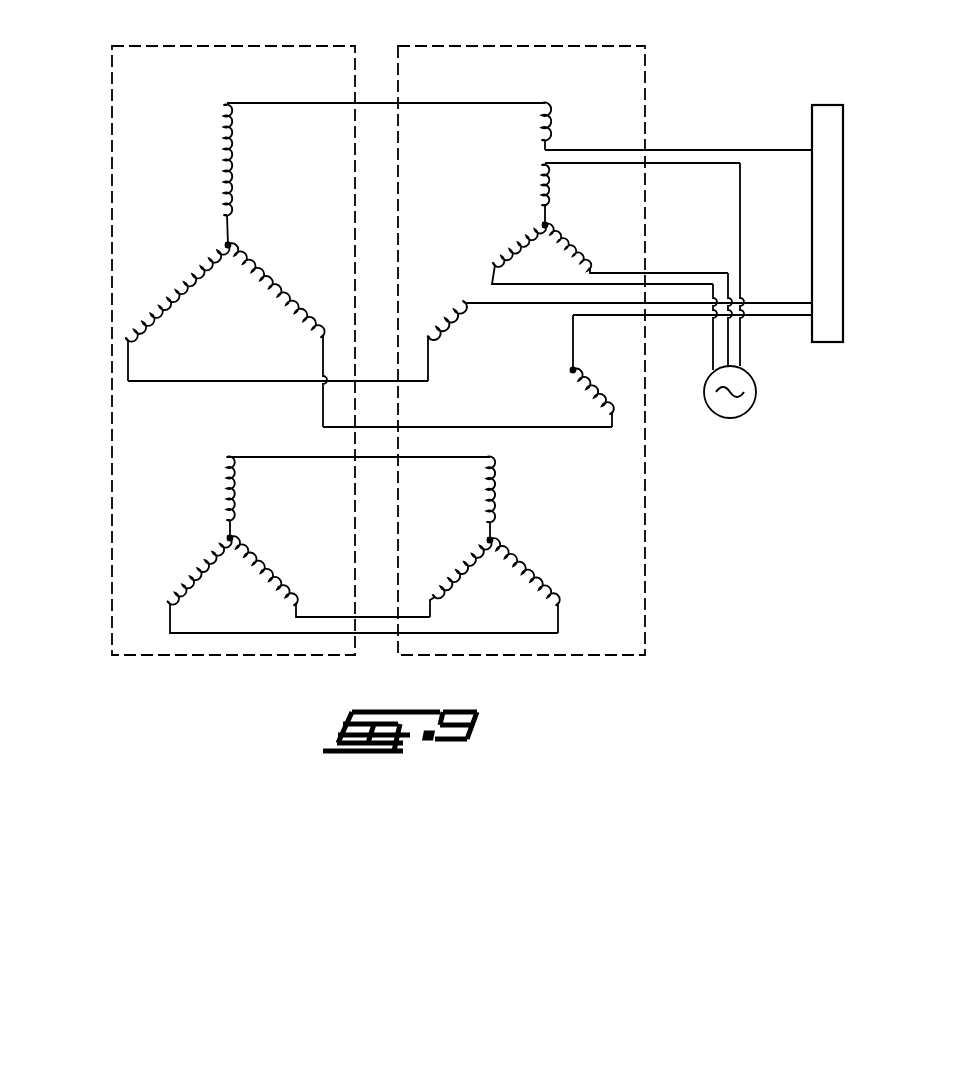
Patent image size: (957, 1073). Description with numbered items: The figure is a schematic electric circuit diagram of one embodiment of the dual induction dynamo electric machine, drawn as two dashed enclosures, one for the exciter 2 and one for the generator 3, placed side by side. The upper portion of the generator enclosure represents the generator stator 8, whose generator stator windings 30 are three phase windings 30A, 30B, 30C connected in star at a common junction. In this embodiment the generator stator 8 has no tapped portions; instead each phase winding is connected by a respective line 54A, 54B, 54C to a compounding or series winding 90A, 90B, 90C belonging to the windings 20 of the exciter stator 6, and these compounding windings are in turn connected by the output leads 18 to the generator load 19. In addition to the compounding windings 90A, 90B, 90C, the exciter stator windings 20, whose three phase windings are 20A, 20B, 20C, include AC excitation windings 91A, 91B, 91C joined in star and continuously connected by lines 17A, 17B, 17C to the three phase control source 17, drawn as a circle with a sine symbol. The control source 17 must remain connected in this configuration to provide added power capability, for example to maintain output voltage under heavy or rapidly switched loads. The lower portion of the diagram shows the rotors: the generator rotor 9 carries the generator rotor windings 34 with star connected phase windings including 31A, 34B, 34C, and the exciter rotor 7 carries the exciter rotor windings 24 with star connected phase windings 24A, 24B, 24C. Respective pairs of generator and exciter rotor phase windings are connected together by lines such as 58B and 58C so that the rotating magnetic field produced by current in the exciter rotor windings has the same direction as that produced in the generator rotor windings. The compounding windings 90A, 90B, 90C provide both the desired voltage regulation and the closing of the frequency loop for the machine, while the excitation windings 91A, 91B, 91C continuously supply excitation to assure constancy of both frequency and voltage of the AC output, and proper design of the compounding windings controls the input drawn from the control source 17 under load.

The exciter 2 is at (506, 45).
The generator 3 is at (220, 45).
The exciter stator 6 is at (611, 230).
The exciter rotor 7 is at (578, 544).
The generator stator 8 is at (283, 245).
The generator rotor 9 is at (297, 537).
The control source 17 is at (732, 290).
The line 17A is at (742, 337).
The line 17B is at (712, 348).
The line 17C is at (730, 350).
The output leads 18 is at (775, 148).
The generator load 19 is at (828, 104).
The exciter stator windings 20 is at (611, 240).
The exciter stator phase winding 20A is at (512, 122).
The exciter stator phase winding 20B is at (562, 236).
The exciter stator phase winding 20C is at (625, 240).
The exciter rotor windings 24 is at (514, 544).
The exciter rotor phase winding 24A is at (496, 495).
The exciter rotor phase winding 24B is at (440, 592).
The exciter rotor phase winding 24C is at (525, 573).
The generator stator windings 30 is at (335, 245).
The generator stator phase winding 30A is at (335, 155).
The generator stator phase winding 30B is at (178, 300).
The generator stator phase winding 30C is at (279, 323).
The secondary winding phase A 31A is at (225, 483).
The generator rotor windings 34 is at (345, 537).
The generator rotor phase winding 34B is at (349, 584).
The generator rotor phase winding 34C is at (328, 575).
The line 54A is at (287, 103).
The line 54B is at (130, 364).
The line 54C is at (323, 357).
The line 58B is at (226, 633).
The line 58C is at (334, 617).
The compounding winding 90A is at (549, 128).
The compounding winding 90B is at (452, 325).
The compounding winding 90C is at (588, 390).
The AC excitation winding 91A is at (549, 194).
The AC excitation winding 91B is at (492, 258).
The AC excitation winding 91C is at (566, 268).